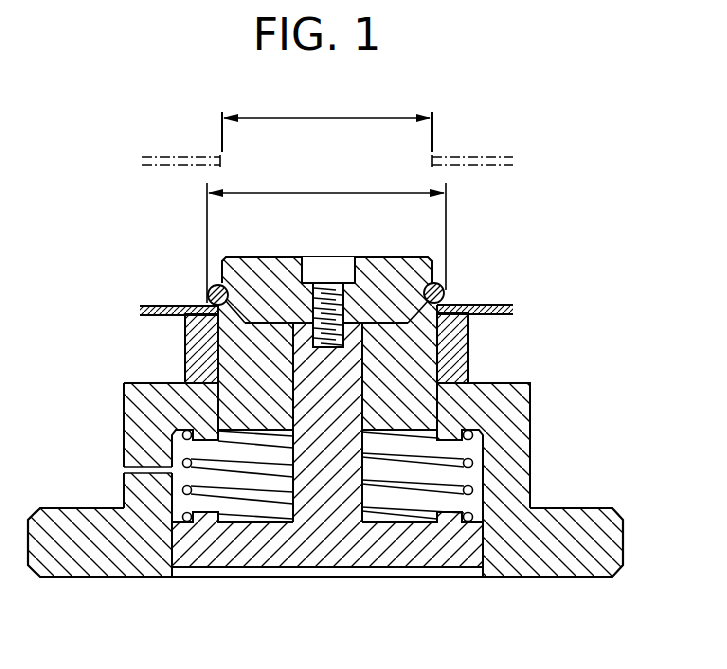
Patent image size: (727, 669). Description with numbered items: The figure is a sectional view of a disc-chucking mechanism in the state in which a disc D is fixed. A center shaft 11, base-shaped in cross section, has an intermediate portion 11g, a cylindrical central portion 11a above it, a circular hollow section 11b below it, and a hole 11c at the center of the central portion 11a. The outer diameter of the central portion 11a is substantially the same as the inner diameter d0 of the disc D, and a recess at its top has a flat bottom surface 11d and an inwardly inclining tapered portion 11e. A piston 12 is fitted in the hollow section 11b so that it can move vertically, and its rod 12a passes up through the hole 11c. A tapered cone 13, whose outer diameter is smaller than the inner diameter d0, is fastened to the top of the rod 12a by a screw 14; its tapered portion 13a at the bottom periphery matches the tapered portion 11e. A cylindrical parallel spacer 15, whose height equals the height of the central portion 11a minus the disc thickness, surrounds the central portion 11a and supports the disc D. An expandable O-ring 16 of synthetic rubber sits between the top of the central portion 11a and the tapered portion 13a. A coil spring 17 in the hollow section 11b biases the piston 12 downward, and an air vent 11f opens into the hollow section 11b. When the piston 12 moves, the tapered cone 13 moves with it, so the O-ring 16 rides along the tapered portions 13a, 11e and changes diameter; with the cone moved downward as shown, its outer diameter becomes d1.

The center shaft 11 is at (510, 410).
The cylindrical central portion 11a is at (233, 366).
The circular hollow section 11b is at (272, 517).
The hole 11c is at (383, 381).
The flat bottom surface 11d is at (385, 312).
The tapered portion 11e is at (213, 341).
The air vent 11f is at (148, 470).
The intermediate portion 11g is at (510, 459).
The piston 12 is at (412, 550).
The rod 12a is at (327, 402).
The tapered cone 13 is at (274, 280).
The tapered portion 13a is at (409, 318).
The screw 14 is at (324, 284).
The cylindrical parallel spacer 15 is at (197, 323).
The O-ring 16 is at (444, 296).
The coil spring 17 is at (236, 495).
The disc D is at (183, 153).
The inner diameter of disc d0 is at (327, 120).
The outer diameter of O-ring d1 is at (326, 232).